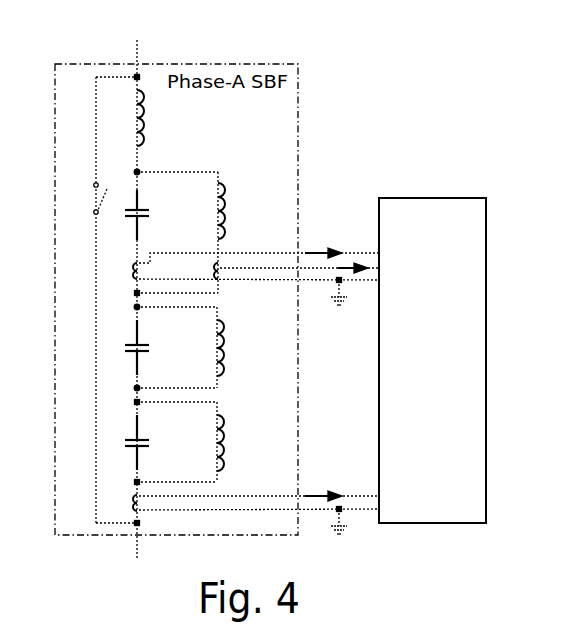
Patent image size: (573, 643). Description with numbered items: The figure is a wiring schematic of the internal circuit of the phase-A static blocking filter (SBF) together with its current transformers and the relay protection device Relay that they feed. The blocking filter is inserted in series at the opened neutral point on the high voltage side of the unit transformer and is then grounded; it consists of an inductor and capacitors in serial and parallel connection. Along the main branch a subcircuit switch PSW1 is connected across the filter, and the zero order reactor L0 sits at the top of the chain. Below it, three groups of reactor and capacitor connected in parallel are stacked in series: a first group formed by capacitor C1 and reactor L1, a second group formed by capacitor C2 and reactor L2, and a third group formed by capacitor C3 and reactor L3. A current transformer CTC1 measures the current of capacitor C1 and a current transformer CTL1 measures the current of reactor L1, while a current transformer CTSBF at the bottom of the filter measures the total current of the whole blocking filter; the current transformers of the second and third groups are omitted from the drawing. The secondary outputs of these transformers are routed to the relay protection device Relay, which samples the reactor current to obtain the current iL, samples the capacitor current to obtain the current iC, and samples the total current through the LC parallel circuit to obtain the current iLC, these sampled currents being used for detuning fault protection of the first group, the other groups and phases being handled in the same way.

The 0 order reactor L0 is at (154, 118).
The first group parallel capacitor C1 is at (149, 215).
The first group parallel reactor L1 is at (235, 232).
The second group parallel capacitor C2 is at (149, 347).
The second group parallel reactor L2 is at (234, 347).
The third group parallel capacitor C3 is at (149, 442).
The third group parallel reactor L3 is at (234, 442).
The current transformer of C1 CTC1 is at (256, 266).
The current transformer of L1 CTL1 is at (296, 284).
The current transformer of the whole blocking filter CTSBF is at (256, 515).
The subcircuit switch PSW1 is at (102, 300).
The current of parallel capacitor iC is at (323, 244).
The current of parallel reactor iL is at (353, 260).
The total current of LC parallel circuit iLC is at (323, 487).
The relay protection device Relay is at (432, 360).